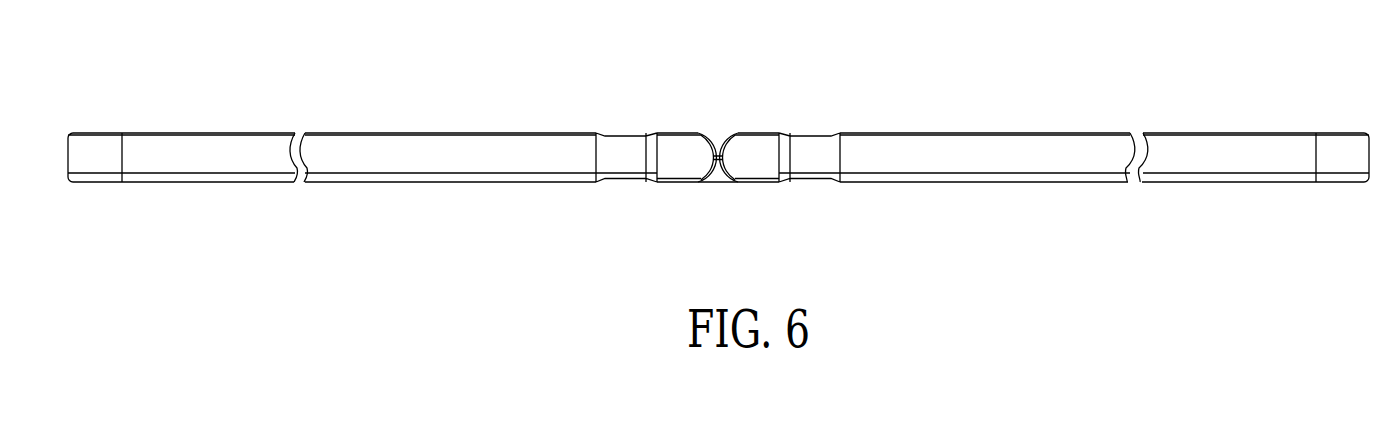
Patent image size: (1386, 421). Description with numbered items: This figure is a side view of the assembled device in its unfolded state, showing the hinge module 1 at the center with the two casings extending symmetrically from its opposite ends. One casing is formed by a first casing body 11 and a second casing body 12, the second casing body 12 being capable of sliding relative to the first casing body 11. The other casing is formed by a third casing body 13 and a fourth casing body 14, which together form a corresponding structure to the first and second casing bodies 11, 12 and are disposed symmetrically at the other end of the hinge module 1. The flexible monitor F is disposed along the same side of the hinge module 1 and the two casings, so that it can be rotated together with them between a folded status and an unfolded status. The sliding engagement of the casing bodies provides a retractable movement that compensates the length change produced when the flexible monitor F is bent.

The hinge module 1 is at (718, 146).
The first casing body 11 is at (638, 143).
The second casing body 12 is at (371, 147).
The third casing body 13 is at (807, 138).
The fourth casing body 14 is at (946, 147).
The flexible monitor F is at (716, 131).